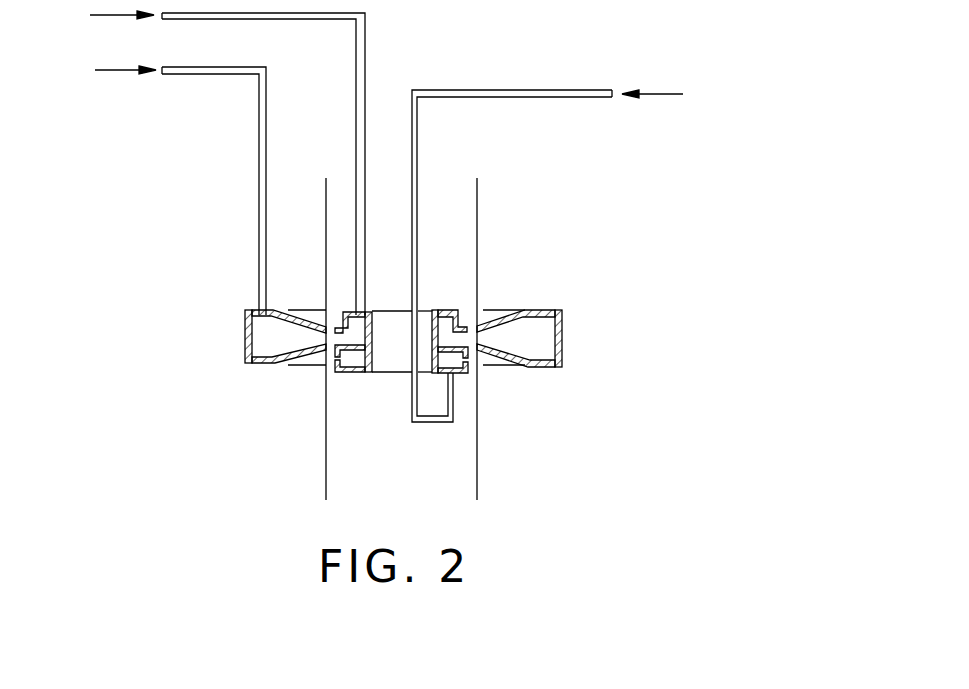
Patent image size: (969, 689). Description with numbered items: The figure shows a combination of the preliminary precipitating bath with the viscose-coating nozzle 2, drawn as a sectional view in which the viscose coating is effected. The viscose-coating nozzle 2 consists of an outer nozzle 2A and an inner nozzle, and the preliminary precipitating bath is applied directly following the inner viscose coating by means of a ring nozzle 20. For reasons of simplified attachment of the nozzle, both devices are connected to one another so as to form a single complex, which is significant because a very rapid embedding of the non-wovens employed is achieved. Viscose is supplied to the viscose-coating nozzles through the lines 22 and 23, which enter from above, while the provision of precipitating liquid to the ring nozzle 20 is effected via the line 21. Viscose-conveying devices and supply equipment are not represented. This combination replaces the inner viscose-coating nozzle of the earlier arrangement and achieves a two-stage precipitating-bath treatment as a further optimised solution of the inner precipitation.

The viscose-coating nozzle 2 is at (485, 338).
The outer nozzle 2A is at (563, 312).
The ring nozzle 20 is at (452, 362).
The precipitating liquid supply line 21 is at (537, 88).
The viscose supply line 22 is at (260, 148).
The viscose supply line 23 is at (355, 97).